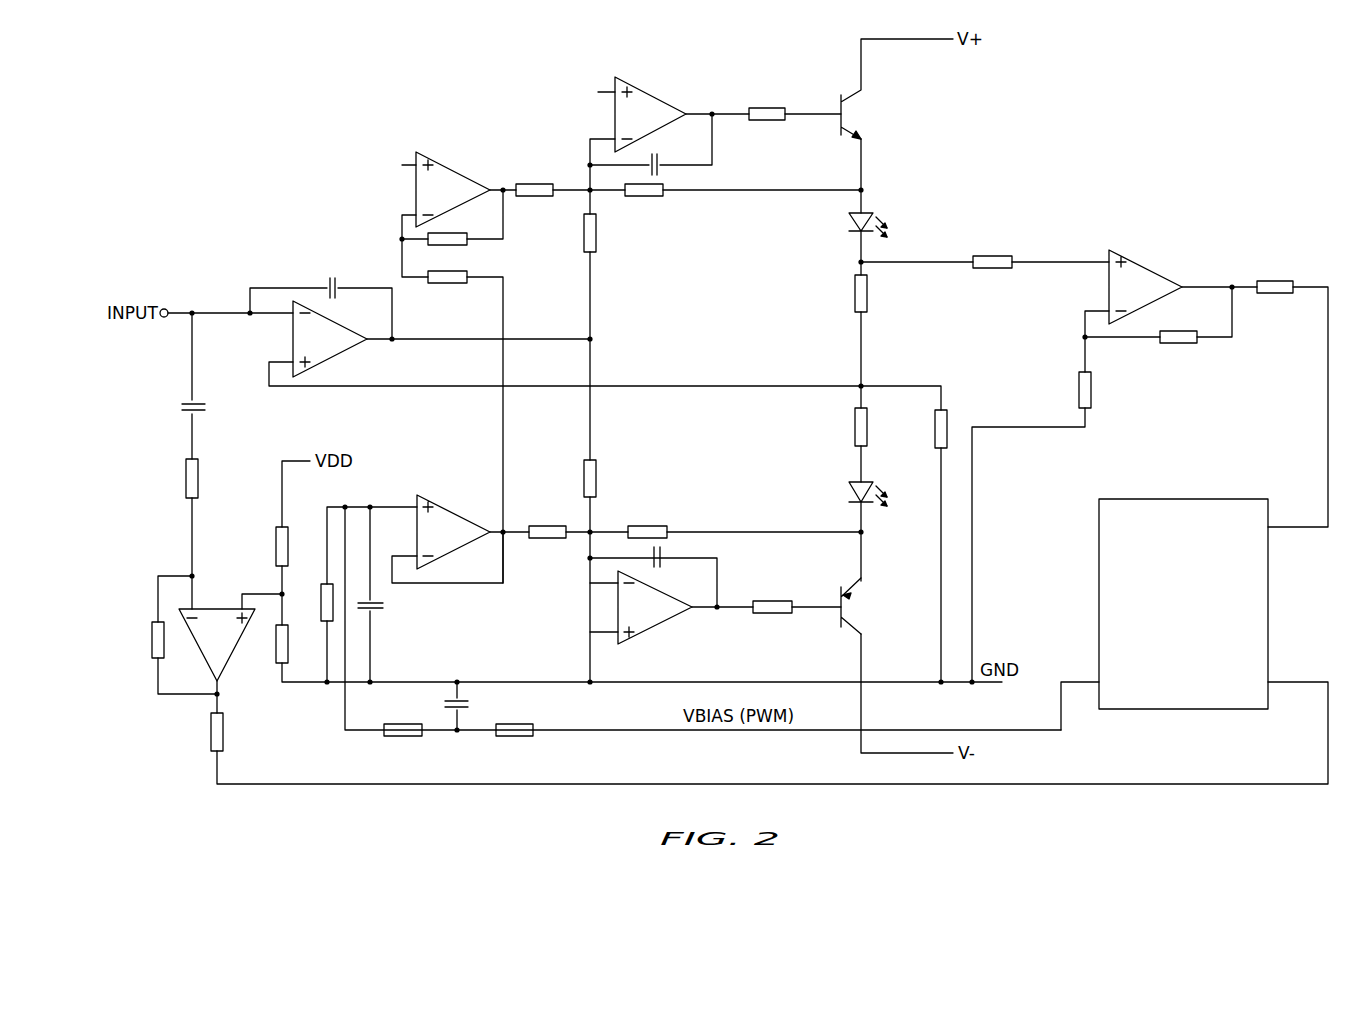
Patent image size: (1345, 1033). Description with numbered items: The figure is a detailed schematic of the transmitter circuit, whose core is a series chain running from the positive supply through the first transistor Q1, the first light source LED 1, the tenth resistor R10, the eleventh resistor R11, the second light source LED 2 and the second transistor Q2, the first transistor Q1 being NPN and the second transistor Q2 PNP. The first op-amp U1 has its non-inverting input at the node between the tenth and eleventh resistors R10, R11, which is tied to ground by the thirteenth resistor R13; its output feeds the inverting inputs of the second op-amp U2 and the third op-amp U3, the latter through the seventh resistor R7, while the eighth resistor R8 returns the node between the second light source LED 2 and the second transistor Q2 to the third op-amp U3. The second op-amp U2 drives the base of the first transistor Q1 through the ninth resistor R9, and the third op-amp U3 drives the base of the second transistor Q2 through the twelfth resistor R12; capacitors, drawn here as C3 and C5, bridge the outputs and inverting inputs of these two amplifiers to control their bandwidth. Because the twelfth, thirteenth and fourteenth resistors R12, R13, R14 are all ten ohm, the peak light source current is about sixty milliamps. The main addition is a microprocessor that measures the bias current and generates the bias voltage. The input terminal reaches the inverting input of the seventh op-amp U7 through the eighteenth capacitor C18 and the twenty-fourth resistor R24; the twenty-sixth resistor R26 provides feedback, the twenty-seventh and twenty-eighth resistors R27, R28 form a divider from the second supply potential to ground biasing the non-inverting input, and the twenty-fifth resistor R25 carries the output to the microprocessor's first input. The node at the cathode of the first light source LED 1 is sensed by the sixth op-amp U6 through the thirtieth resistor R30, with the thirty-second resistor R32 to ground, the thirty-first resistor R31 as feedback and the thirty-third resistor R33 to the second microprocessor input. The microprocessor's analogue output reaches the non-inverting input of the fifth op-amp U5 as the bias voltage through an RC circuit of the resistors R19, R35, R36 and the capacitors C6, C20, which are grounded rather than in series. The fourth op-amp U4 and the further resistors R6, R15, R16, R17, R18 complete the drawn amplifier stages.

The eighteenth capacitor C18 is at (176, 408).
The twenty-fourth resistor R24 is at (175, 478).
The twenty-sixth resistor R26 is at (142, 640).
The twenty-fifth resistor R25 is at (201, 732).
The seventh op-amp U7 is at (217, 645).
The twenty-seventh resistor R27 is at (266, 546).
The twenty-eighth resistor R28 is at (267, 644).
The nineteenth resistor R19 is at (311, 602).
The sixth capacitor C6 is at (384, 606).
The twentieth capacitor C20 is at (477, 702).
The thirty-fifth resistor R35 is at (403, 741).
The thirty-sixth resistor R36 is at (514, 741).
The first op-amp U1 is at (330, 339).
The feedback capacitor C5 is at (509, 429).
The fourth op-amp U4 is at (453, 185).
The resistor R16 is at (447, 249).
The resistor R18 is at (447, 288).
The resistor R15 is at (535, 200).
The seventh resistor R7 is at (644, 200).
The resistor R6 is at (603, 233).
The ninth resistor R9 is at (604, 478).
The capacitor C3 is at (670, 160).
The second op-amp U2 is at (650, 114).
The eighth resistor R8 is at (767, 125).
The first transistor Q1 is at (897, 89).
The first light source LED 1 is at (844, 225).
The twelfth resistor R12 is at (880, 293).
The thirteenth resistor R13 is at (844, 427).
The fourteenth resistor R14 is at (925, 429).
The second light source LED 2 is at (844, 494).
The thirtieth resistor R30 is at (992, 273).
The sixth op-amp U6 is at (1145, 282).
The thirty-first resistor R31 is at (1179, 347).
The thirty-third resistor R33 is at (1276, 297).
The thirty-second resistor R32 is at (1104, 390).
The fifth op-amp U5 is at (453, 529).
The resistor R17 is at (548, 543).
The tenth resistor R10 is at (648, 522).
The third op-amp U3 is at (655, 607).
The eleventh resistor R11 is at (772, 617).
The second transistor Q2 is at (861, 606).